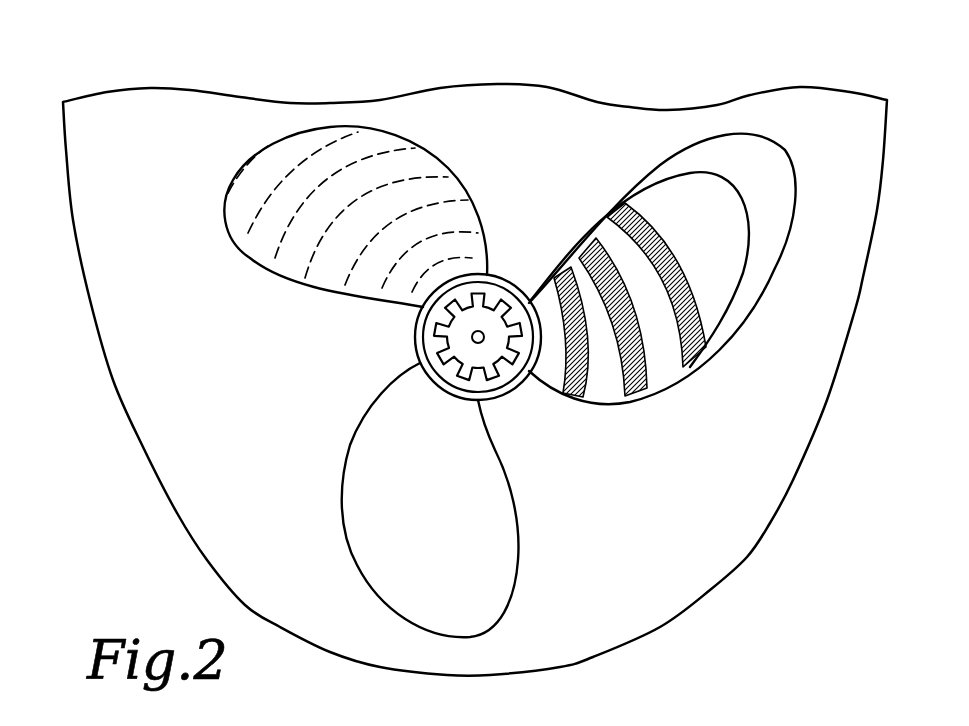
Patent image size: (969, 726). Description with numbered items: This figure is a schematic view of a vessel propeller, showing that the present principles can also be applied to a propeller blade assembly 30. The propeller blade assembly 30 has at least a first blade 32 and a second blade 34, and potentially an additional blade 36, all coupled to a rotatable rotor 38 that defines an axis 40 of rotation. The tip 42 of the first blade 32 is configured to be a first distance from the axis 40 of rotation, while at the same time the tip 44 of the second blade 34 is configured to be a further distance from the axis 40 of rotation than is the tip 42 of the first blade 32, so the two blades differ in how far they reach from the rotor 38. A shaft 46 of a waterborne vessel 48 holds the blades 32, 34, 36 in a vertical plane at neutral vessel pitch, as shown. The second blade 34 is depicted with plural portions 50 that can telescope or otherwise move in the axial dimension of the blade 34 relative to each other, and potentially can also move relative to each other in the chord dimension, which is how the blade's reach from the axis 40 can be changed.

The propeller blade assembly 30 is at (308, 413).
The first blade 32 is at (455, 173).
The second blade 34 is at (661, 286).
The additional blade 36 is at (520, 527).
The rotatable rotor 38 is at (497, 293).
The axis of rotation 40 is at (482, 342).
The tip of the first blade 42 is at (240, 165).
The tip of the second blade 44 is at (773, 139).
The shaft 46 is at (453, 352).
The waterborne vessel 48 is at (152, 113).
The plural portions 50 is at (660, 323).